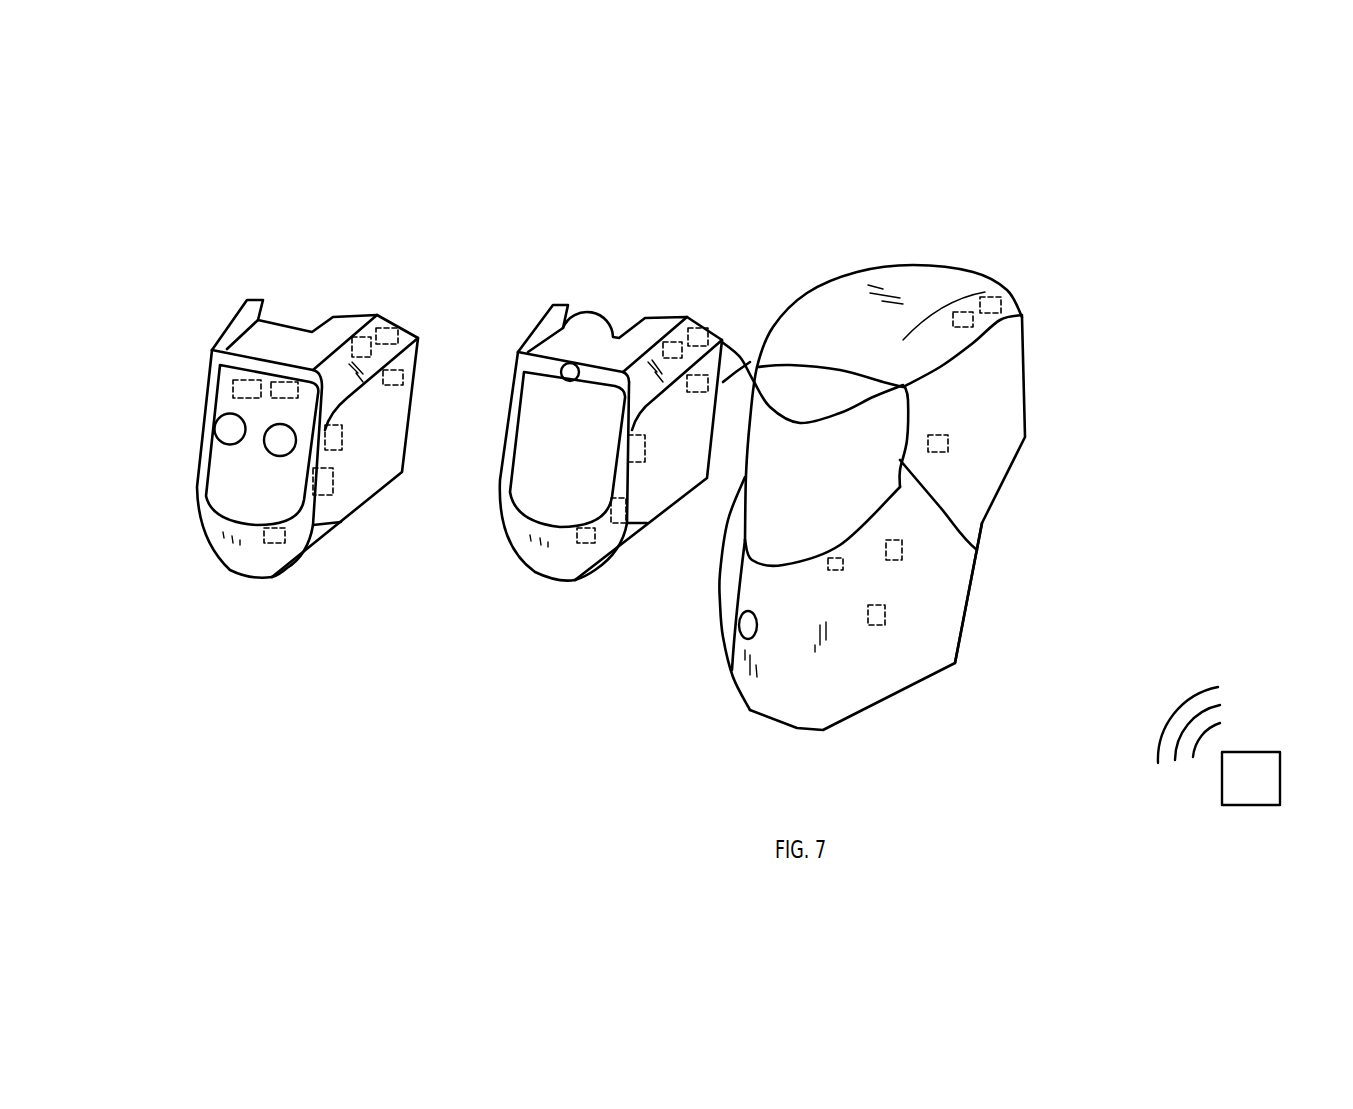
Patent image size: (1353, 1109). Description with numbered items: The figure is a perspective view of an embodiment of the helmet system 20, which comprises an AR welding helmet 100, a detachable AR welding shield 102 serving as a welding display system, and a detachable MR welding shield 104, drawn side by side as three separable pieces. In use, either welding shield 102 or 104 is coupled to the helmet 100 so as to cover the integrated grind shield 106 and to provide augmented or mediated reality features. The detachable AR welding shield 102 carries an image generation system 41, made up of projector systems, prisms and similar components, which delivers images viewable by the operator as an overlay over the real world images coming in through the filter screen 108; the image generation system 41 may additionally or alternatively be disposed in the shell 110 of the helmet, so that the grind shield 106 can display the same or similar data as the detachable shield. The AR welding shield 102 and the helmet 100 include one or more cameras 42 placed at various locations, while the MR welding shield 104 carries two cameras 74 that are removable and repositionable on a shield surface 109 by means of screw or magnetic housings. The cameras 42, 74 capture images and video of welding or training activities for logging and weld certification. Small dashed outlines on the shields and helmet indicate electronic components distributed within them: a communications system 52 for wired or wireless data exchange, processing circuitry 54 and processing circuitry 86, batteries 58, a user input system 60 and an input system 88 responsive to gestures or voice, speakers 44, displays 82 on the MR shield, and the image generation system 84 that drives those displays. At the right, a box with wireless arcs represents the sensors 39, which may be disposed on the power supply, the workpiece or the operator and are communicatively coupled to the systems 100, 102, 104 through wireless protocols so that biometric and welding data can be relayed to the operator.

The helmet system 20 is at (1176, 287).
The sensors 39 is at (1250, 752).
The image generation system 41 is at (580, 542).
The camera 42 is at (568, 365).
The speakers 44 is at (405, 367).
The communications system 52 is at (365, 330).
The processing circuitry 54 is at (700, 330).
The batteries 58 is at (338, 445).
The user input system 60 is at (616, 527).
The cameras 74 is at (280, 445).
The displays 82 is at (244, 392).
The image generation system 84 is at (270, 534).
The processing circuitry 86 is at (385, 335).
The input system 88 is at (325, 492).
The AR welding helmet 100 is at (930, 265).
The detachable AR welding shield 102 is at (657, 316).
The detachable MR welding shield 104 is at (285, 330).
The grind shield 106 is at (977, 550).
The filter screen 108 is at (567, 430).
The shield surface 109 is at (233, 470).
The shell 110 is at (922, 568).